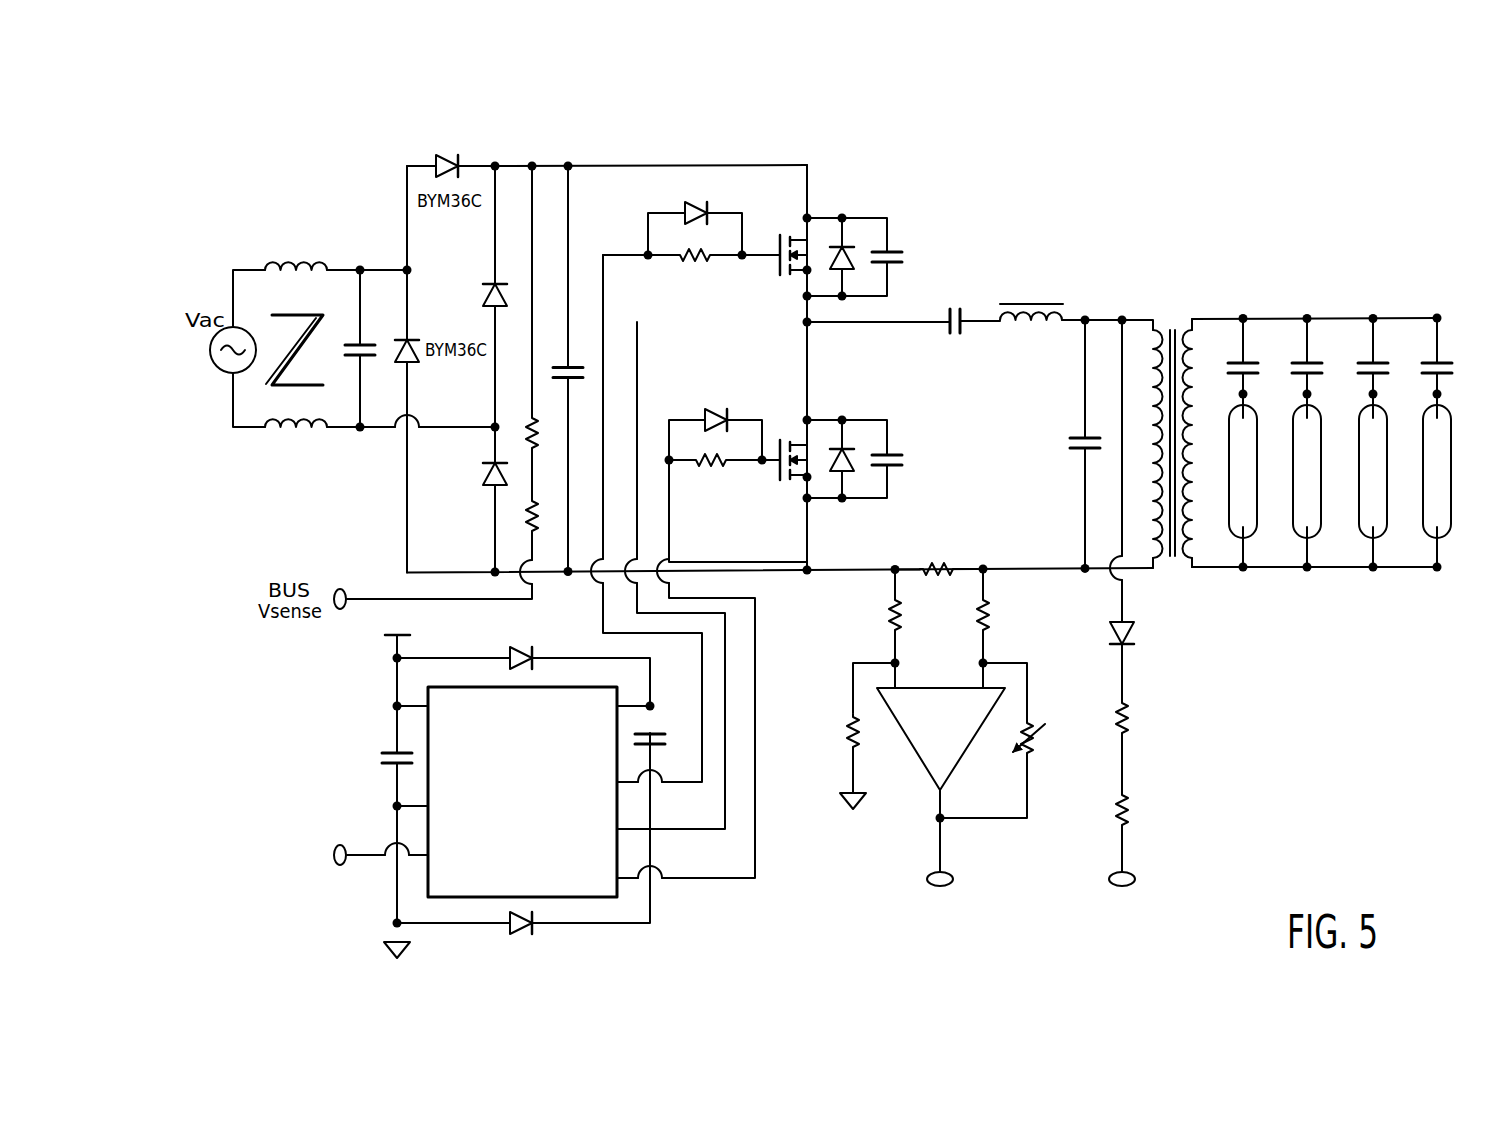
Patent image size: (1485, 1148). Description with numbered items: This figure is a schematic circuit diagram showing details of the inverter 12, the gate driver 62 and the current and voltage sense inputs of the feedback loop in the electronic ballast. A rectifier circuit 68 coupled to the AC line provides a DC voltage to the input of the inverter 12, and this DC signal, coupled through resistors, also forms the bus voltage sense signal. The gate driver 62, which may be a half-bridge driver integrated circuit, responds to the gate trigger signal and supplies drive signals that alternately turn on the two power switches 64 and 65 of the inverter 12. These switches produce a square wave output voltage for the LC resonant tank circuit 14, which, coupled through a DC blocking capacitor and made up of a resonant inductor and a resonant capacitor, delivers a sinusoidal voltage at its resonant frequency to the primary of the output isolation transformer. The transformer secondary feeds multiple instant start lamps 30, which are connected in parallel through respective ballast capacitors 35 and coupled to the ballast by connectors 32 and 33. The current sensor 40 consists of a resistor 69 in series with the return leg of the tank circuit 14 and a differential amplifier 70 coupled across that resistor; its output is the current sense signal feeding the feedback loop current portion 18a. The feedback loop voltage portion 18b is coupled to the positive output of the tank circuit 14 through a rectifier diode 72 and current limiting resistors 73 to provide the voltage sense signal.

The rectifier circuit 68 is at (572, 163).
The half-bridge resonant inverter 12 is at (821, 153).
The power switch 64 is at (777, 282).
The power switch 65 is at (790, 496).
The gate driver 62 is at (578, 648).
The LC resonant tank circuit 14 is at (1086, 282).
The resistor 69 is at (944, 560).
The differential amplifier 70 is at (918, 753).
The current sensor 40 is at (1052, 718).
The feedback loop current portion 18a is at (983, 858).
The feedback loop voltage portion 18b is at (1150, 857).
The rectifier diode 72 is at (1137, 628).
The current limiting resistor 73 is at (1137, 714).
The ballast capacitor 35 is at (1250, 361).
The connector 32 is at (1238, 394).
The instant start lamp 30 is at (1232, 528).
The connector 33 is at (1245, 572).